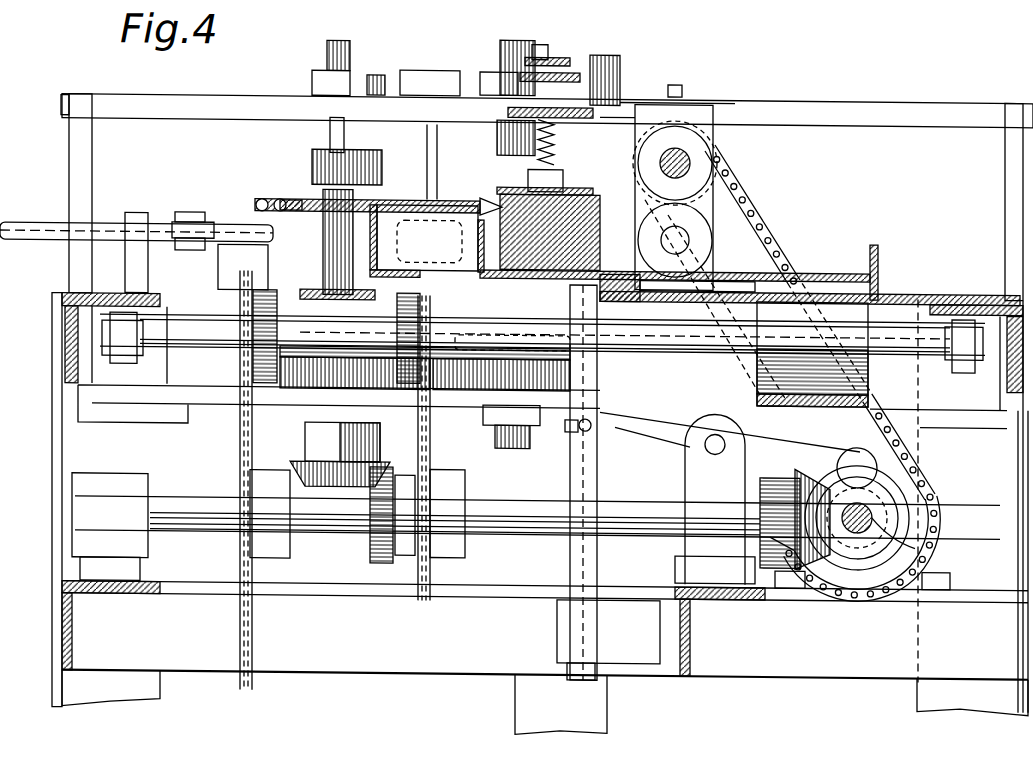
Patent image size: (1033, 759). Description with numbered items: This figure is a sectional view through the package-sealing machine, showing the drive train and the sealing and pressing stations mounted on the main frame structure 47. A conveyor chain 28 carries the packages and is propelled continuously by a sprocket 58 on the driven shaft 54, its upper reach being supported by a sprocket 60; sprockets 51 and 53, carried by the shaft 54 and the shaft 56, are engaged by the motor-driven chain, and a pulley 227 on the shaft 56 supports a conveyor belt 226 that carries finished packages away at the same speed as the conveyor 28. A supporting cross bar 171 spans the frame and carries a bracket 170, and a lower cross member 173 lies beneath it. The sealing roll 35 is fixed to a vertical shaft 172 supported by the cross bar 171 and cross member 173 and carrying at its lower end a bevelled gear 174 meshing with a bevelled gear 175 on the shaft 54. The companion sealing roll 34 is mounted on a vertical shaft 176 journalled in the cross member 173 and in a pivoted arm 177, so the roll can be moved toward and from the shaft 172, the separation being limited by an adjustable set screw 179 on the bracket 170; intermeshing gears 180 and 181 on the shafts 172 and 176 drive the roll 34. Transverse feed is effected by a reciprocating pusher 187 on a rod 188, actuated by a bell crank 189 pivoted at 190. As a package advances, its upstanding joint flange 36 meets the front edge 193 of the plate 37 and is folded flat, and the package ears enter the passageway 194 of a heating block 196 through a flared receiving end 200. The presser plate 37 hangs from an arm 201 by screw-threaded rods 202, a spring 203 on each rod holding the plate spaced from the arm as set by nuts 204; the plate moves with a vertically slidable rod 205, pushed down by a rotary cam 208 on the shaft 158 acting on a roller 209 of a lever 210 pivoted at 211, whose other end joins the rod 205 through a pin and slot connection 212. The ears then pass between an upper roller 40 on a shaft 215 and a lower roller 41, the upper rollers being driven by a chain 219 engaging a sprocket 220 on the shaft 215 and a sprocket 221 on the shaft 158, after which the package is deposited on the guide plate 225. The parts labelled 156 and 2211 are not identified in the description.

The conveyor chain 28 is at (428, 443).
The sealing roll 34 is at (440, 185).
The sealing roll 35 is at (290, 194).
The joint flange 36 is at (428, 191).
The presser plate 37 is at (525, 182).
The upper roller 40 is at (712, 144).
The lower roller 41 is at (695, 229).
The main frame structure 47 is at (52, 294).
The sprocket 51 is at (258, 465).
The sprocket 53 is at (258, 338).
The driven shaft 54 is at (555, 505).
The shaft 56 is at (182, 341).
The sprocket 58 is at (410, 554).
The sprocket 60 is at (410, 288).
The chain end 156 is at (822, 540).
The shaft 158 is at (920, 539).
The bracket 170 is at (432, 66).
The cross bar 171 is at (893, 97).
The shaft 172 is at (330, 131).
The lower cross member 173 is at (205, 406).
The bevelled gear 174 is at (300, 464).
The bevelled gear 175 is at (372, 545).
The shaft 176 is at (512, 35).
The arm 177 is at (490, 67).
The adjustable set screw 179 is at (390, 70).
The gear 180 is at (360, 391).
The gear 181 is at (472, 391).
The pusher 187 is at (322, 225).
The rod 188 is at (162, 223).
The bell crank 189 is at (213, 198).
The pivot 190 is at (218, 256).
The front edge 193 is at (500, 182).
The passageway 194 is at (555, 203).
The heating block 196 is at (475, 248).
The flared receiving end 200 is at (485, 202).
The arm 201 is at (618, 93).
The screw-threaded rod 202 is at (548, 39).
The spring 203 is at (565, 144).
The nuts 204 is at (575, 54).
The rod 205 is at (597, 477).
The rotary cam 208 is at (900, 496).
The roller 209 is at (840, 443).
The lever 210 is at (775, 432).
The pivot 211 is at (705, 443).
The pin and slot connection 212 is at (568, 424).
The shaft 215 is at (690, 157).
The chain 219 is at (735, 184).
The sprocket 220 is at (712, 197).
The sprocket 221 is at (905, 462).
The guide plate 225 is at (770, 264).
The conveyor belt 226 is at (872, 253).
The pulley 227 is at (850, 291).
The bolt 2211 is at (690, 84).